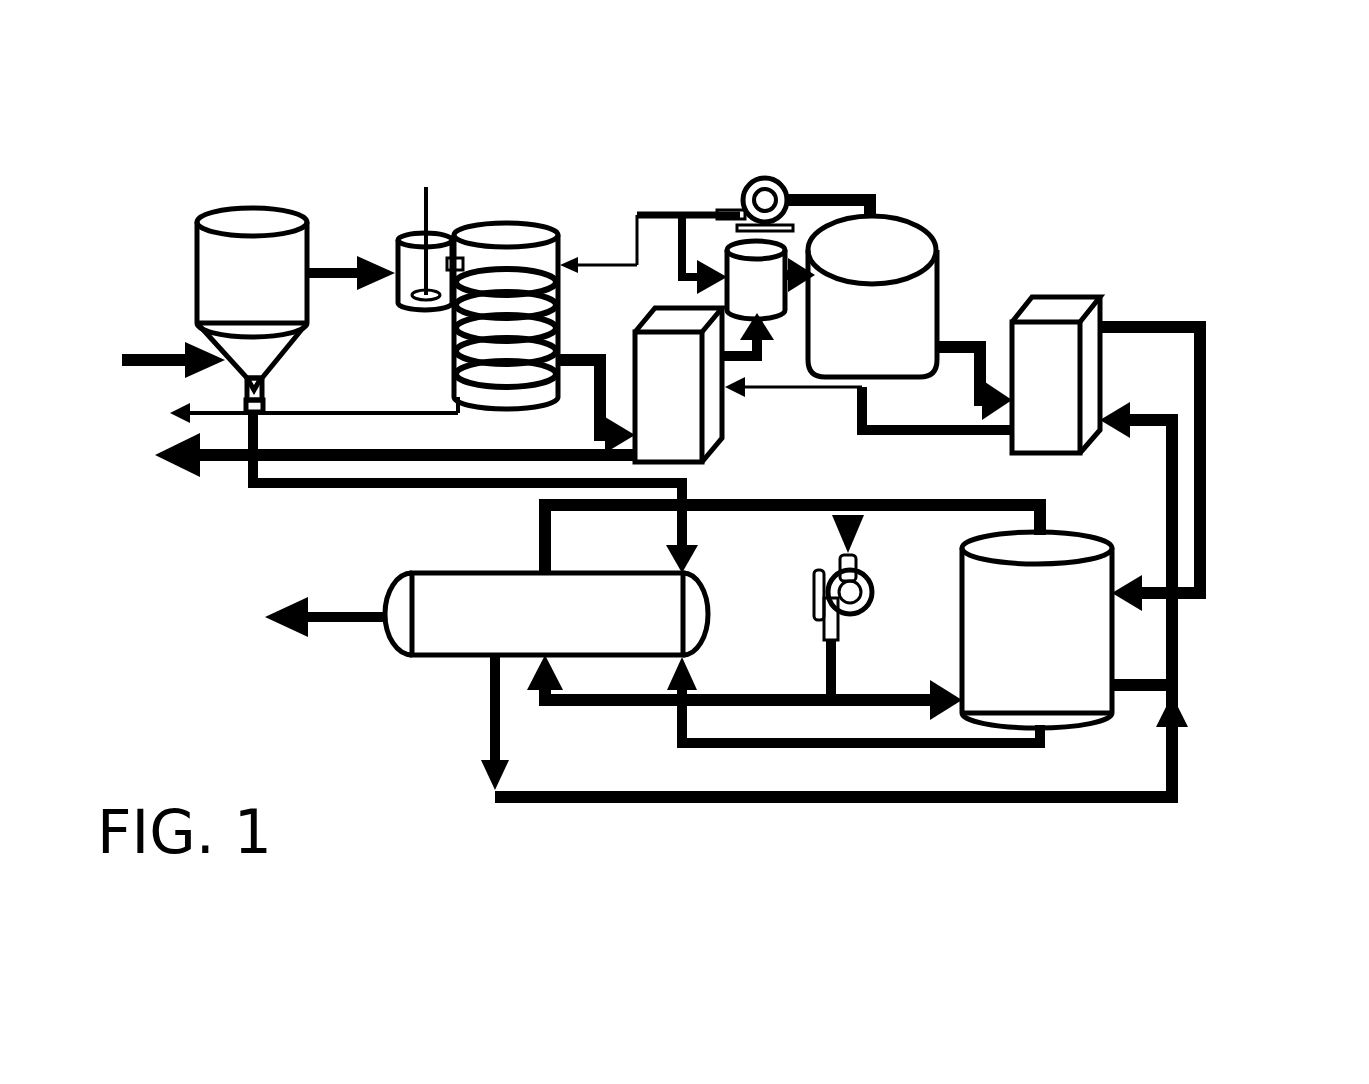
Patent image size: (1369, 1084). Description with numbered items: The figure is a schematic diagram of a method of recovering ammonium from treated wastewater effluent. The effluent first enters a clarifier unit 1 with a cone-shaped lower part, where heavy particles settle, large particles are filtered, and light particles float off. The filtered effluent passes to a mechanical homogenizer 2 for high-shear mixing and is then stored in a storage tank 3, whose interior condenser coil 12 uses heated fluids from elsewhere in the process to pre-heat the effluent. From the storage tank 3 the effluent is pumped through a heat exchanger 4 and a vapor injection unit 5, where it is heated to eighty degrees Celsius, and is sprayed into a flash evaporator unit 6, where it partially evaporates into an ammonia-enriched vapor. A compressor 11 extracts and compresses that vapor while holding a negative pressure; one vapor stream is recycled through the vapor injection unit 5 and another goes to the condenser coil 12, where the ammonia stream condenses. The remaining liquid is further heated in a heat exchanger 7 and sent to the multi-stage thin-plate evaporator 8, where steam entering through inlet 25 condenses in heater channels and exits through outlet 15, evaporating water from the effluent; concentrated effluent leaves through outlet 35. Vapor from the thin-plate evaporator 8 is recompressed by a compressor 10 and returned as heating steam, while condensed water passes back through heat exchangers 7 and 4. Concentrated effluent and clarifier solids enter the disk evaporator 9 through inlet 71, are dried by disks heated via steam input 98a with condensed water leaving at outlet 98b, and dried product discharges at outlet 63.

The clarifier unit 1 is at (237, 280).
The mechanical homogenizer 2 is at (420, 268).
The storage tank 3 is at (535, 255).
The heat exchanger 4 is at (657, 342).
The vapor injection unit 5 is at (747, 277).
The flash evaporator unit 6 is at (905, 303).
The heat exchanger 7 is at (1040, 333).
The multi-stage thin-plate evaporator 8 is at (1045, 690).
The disk evaporator 9 is at (470, 640).
The compressor 10 is at (852, 615).
The compressor 11 is at (785, 180).
The condenser coil 12 is at (457, 357).
The heated fluid outlet 15 is at (1178, 672).
The heated fluid inlet 25 is at (905, 705).
The outlet 35 is at (980, 755).
The outlet 63 is at (347, 625).
The inlet 71 is at (680, 745).
The steam input 98a is at (600, 705).
The condensed water outlet 98b is at (490, 690).